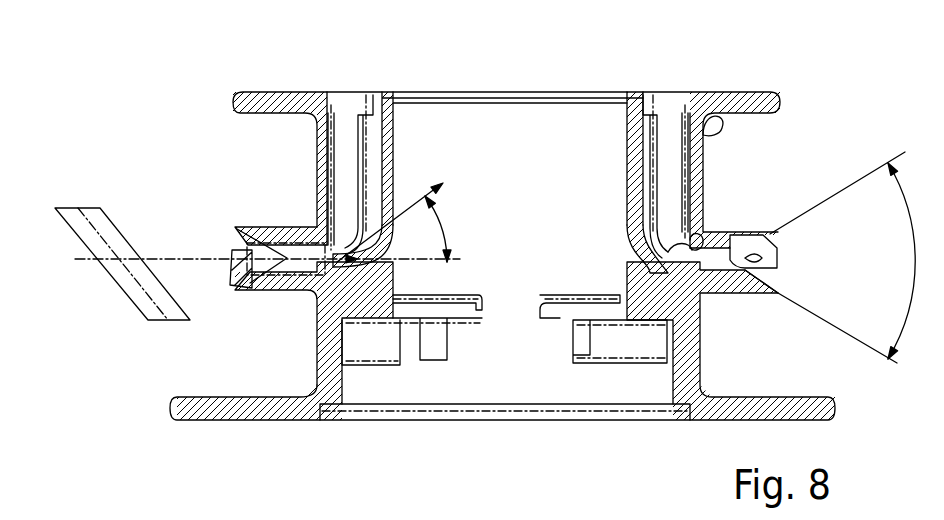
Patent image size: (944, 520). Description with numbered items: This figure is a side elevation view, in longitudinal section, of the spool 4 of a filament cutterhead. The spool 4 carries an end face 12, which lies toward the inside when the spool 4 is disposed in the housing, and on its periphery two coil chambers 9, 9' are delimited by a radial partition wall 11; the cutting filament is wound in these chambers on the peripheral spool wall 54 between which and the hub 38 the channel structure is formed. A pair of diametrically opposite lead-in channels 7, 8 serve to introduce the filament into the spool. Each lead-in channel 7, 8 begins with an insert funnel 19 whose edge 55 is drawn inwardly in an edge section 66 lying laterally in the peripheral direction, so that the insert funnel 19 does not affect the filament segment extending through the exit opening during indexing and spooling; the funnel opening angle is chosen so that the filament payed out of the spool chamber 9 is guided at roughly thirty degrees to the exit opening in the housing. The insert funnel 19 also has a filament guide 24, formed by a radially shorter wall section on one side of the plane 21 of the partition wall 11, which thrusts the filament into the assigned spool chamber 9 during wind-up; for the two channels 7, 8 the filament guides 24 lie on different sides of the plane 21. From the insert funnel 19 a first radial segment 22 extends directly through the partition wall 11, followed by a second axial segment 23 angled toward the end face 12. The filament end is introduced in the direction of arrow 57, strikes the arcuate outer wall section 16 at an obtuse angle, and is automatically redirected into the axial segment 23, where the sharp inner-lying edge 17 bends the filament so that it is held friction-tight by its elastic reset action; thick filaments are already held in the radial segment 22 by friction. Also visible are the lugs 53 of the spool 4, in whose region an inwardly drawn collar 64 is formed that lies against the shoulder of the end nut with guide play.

The spool 4 is at (175, 122).
The lead-in channel 7 is at (357, 188).
The lead-in channel 8 is at (657, 151).
The coil chamber 9 is at (259, 168).
The coil chamber 9' is at (490, 341).
The radial partition wall 11 is at (265, 238).
The end face 12 is at (748, 100).
The wall section 16 is at (657, 272).
The edge 17 is at (708, 232).
The insert funnel 19 is at (782, 257).
The plane 21 is at (88, 218).
The radial segment 22 is at (300, 246).
The axial segment 23 is at (340, 142).
The filament guide 24 is at (252, 270).
The hub 38 is at (627, 112).
The lugs 53 is at (583, 342).
The peripheral spool wall 54 is at (709, 138).
The edge 55 is at (777, 233).
The arrow 57 is at (397, 236).
The collar 64 is at (540, 303).
The edge section 66 is at (744, 278).